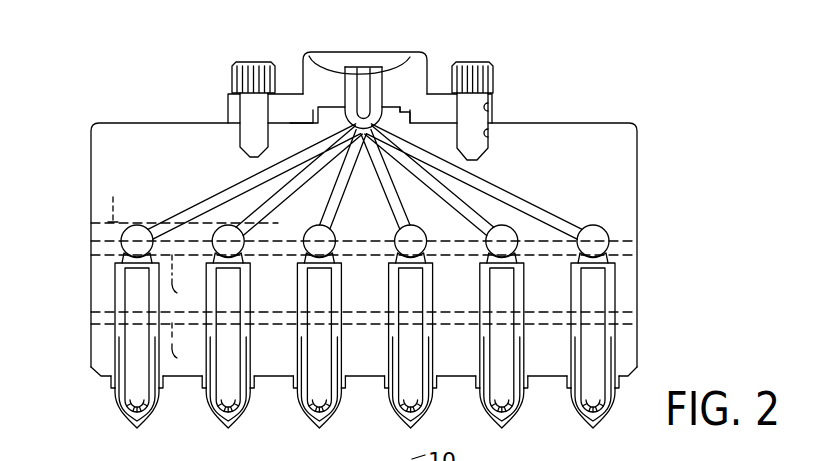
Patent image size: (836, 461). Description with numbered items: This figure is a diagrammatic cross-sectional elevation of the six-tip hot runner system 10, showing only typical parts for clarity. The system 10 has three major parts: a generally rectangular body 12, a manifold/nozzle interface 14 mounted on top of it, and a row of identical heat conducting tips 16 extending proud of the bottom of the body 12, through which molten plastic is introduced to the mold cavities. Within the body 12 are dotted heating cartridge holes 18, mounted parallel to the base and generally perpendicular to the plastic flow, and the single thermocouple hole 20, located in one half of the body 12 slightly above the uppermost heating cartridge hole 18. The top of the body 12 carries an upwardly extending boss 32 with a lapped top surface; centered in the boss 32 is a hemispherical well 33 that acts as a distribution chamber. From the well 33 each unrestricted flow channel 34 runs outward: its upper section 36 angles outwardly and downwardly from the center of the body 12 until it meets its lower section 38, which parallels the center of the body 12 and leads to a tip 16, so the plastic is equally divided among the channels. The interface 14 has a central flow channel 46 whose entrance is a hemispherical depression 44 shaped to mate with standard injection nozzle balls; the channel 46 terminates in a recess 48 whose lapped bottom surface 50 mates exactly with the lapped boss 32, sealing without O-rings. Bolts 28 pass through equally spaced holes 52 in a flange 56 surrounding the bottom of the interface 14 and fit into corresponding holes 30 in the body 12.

The hot runner system 10 is at (340, 230).
The body 12 is at (575, 123).
The manifold/nozzle interface 14 is at (425, 47).
The heat conducting tips 16 is at (118, 416).
The heating cartridge holes 18 is at (188, 311).
The thermocouple hole 20 is at (184, 198).
The bolts 28 is at (250, 62).
The bolt holes 30 is at (488, 137).
The boss 32 is at (326, 108).
The hemispherical well 33 is at (353, 66).
The flow channel 34 is at (182, 204).
The upper section 36 is at (218, 188).
The lower section 38 is at (130, 246).
The hemispherical depression 44 is at (390, 56).
The central flow channel 46 is at (371, 68).
The recess 48 is at (302, 92).
The bottom surface 50 is at (412, 108).
The holes 52 is at (487, 103).
The flange 56 is at (343, 107).